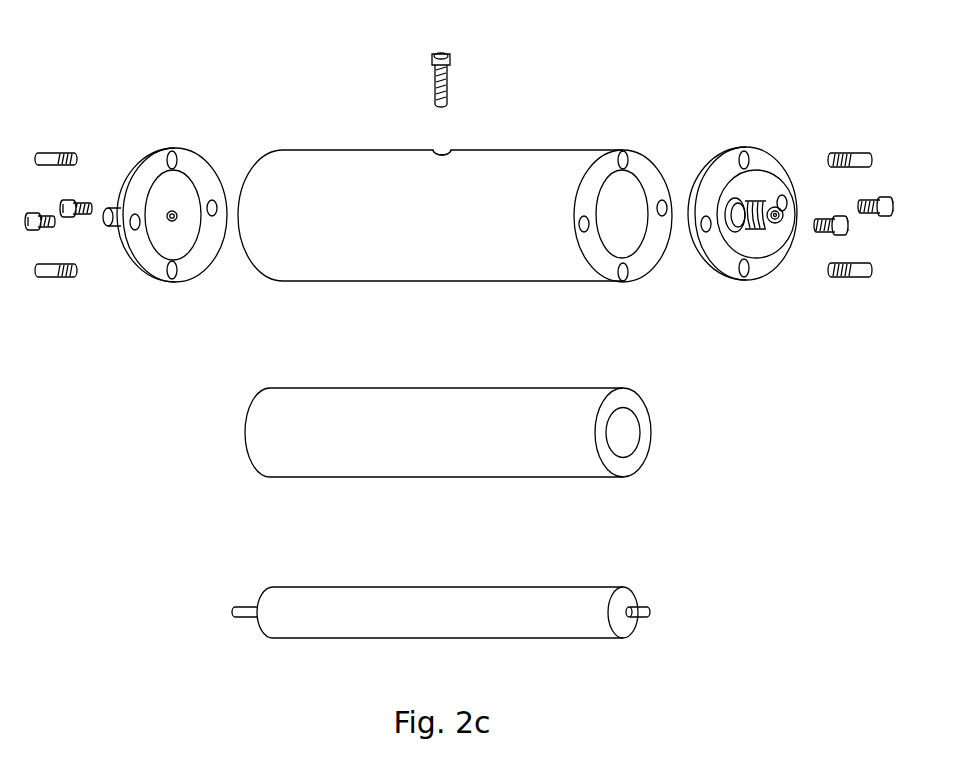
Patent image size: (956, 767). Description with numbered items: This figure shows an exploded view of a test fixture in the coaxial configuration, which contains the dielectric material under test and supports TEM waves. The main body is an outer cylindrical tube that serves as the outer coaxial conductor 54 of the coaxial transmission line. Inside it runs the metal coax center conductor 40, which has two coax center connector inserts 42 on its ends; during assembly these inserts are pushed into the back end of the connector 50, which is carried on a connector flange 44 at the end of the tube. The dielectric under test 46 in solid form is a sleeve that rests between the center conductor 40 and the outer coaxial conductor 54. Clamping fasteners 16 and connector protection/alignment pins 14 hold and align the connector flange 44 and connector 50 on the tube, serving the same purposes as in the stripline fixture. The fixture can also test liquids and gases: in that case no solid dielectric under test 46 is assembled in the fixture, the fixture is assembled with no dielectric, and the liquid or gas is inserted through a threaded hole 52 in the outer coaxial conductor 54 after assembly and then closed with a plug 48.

The connector protection/alignment pin 14 is at (848, 273).
The clamping fastener 16 is at (825, 229).
The coax center conductor 40 is at (442, 609).
The coax center connector insert 42 is at (247, 607).
The connector flange 44 is at (148, 152).
The dielectric under test (solid form) 46 is at (387, 412).
The plug 48 is at (440, 52).
The connector 50 is at (752, 202).
The threaded hole 52 is at (472, 130).
The outer coaxial conductor 54 is at (332, 170).